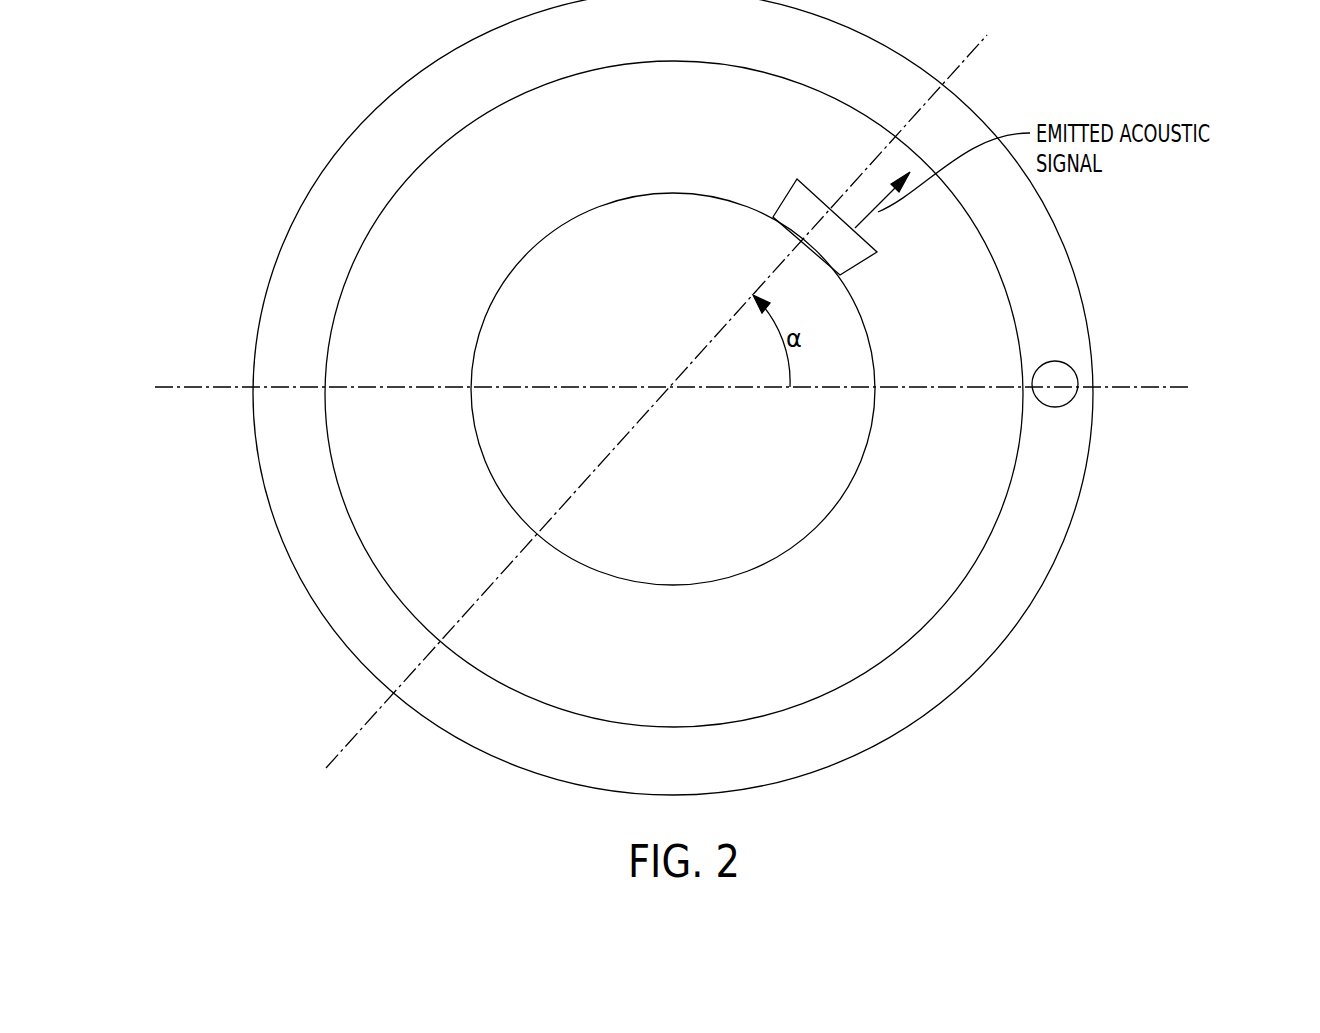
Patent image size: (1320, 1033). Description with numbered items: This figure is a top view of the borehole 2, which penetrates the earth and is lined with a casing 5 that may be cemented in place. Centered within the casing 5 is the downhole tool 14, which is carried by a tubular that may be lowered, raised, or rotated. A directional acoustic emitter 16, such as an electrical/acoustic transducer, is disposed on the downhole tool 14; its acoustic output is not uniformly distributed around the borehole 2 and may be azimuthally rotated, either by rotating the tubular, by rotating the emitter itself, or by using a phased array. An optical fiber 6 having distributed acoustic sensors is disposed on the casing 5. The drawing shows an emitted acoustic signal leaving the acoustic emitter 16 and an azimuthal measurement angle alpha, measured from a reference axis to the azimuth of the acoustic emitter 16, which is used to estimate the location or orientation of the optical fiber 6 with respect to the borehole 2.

The borehole 2 is at (413, 77).
The casing 5 is at (408, 177).
The downhole tool 14 is at (520, 262).
The directional acoustic emitter 16 is at (793, 193).
The optical fiber 6 is at (1067, 375).